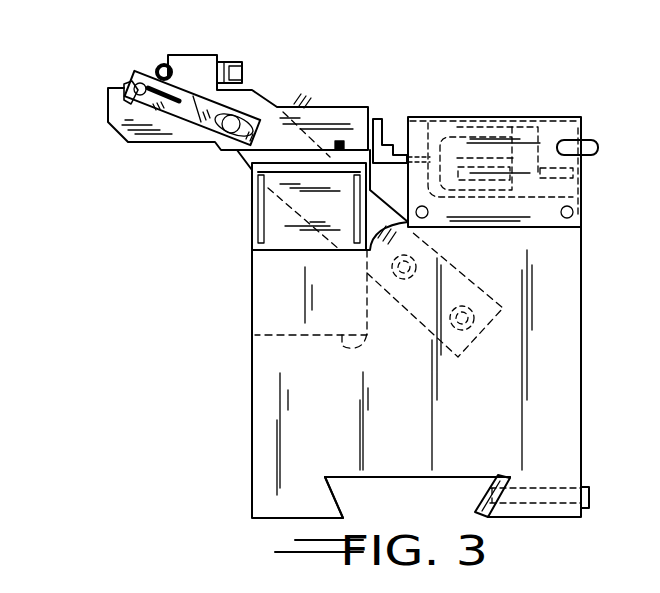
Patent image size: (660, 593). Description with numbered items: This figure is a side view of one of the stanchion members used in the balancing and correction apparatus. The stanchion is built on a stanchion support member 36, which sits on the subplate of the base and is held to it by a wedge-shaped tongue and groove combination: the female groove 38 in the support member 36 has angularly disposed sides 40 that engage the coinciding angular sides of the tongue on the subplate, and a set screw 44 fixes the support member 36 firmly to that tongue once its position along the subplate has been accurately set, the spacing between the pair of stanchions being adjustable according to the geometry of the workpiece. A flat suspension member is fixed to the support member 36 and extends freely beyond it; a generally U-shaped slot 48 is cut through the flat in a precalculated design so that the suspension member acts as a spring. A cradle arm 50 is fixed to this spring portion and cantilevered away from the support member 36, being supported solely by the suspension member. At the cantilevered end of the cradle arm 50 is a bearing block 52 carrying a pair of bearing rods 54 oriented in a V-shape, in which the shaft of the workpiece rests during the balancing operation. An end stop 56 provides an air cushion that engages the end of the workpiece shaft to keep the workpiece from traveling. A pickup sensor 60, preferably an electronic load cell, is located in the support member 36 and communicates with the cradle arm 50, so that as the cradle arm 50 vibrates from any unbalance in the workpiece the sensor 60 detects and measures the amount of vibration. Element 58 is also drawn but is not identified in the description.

The stanchion support member 36 is at (563, 418).
The female groove 38 is at (440, 478).
The angularly disposed sides 40 is at (344, 494).
The set screw 44 is at (558, 488).
The U-shaped slot 48 is at (252, 228).
The cradle arm 50 is at (162, 127).
The bearing block 52 is at (110, 103).
The bearing rod 54 is at (128, 88).
The end stop 56 is at (181, 92).
The latch tab 58 is at (401, 157).
The pickup sensor 60 is at (497, 137).